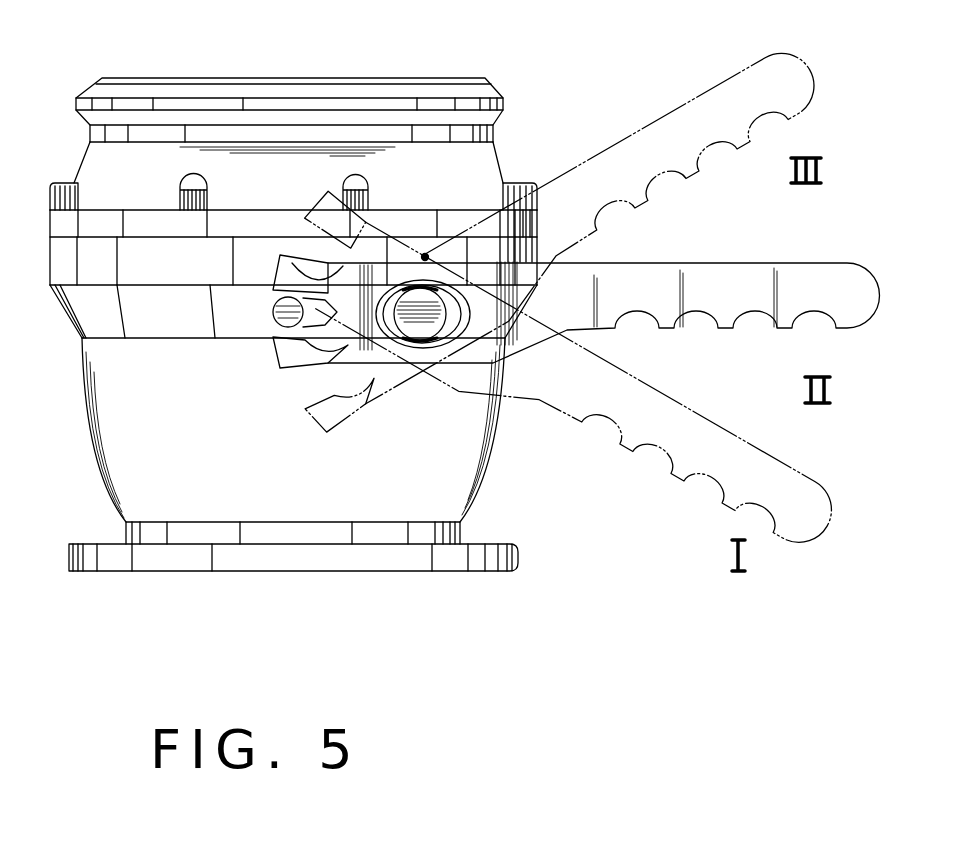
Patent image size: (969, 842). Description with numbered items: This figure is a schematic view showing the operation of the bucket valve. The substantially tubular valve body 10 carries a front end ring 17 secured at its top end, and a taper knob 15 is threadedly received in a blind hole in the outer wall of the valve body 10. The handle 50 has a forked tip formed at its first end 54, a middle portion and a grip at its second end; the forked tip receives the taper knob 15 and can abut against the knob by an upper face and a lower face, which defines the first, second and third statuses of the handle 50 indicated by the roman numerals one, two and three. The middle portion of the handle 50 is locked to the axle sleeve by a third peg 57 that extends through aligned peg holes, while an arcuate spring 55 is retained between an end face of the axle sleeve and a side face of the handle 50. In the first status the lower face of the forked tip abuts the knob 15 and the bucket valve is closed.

The valve body 10 is at (462, 471).
The taper knob 15 is at (276, 332).
The front end ring 17 is at (402, 96).
The handle 50 is at (598, 160).
The first end 54 is at (302, 246).
The arcuate spring 55 is at (386, 344).
The third peg 57 is at (426, 254).